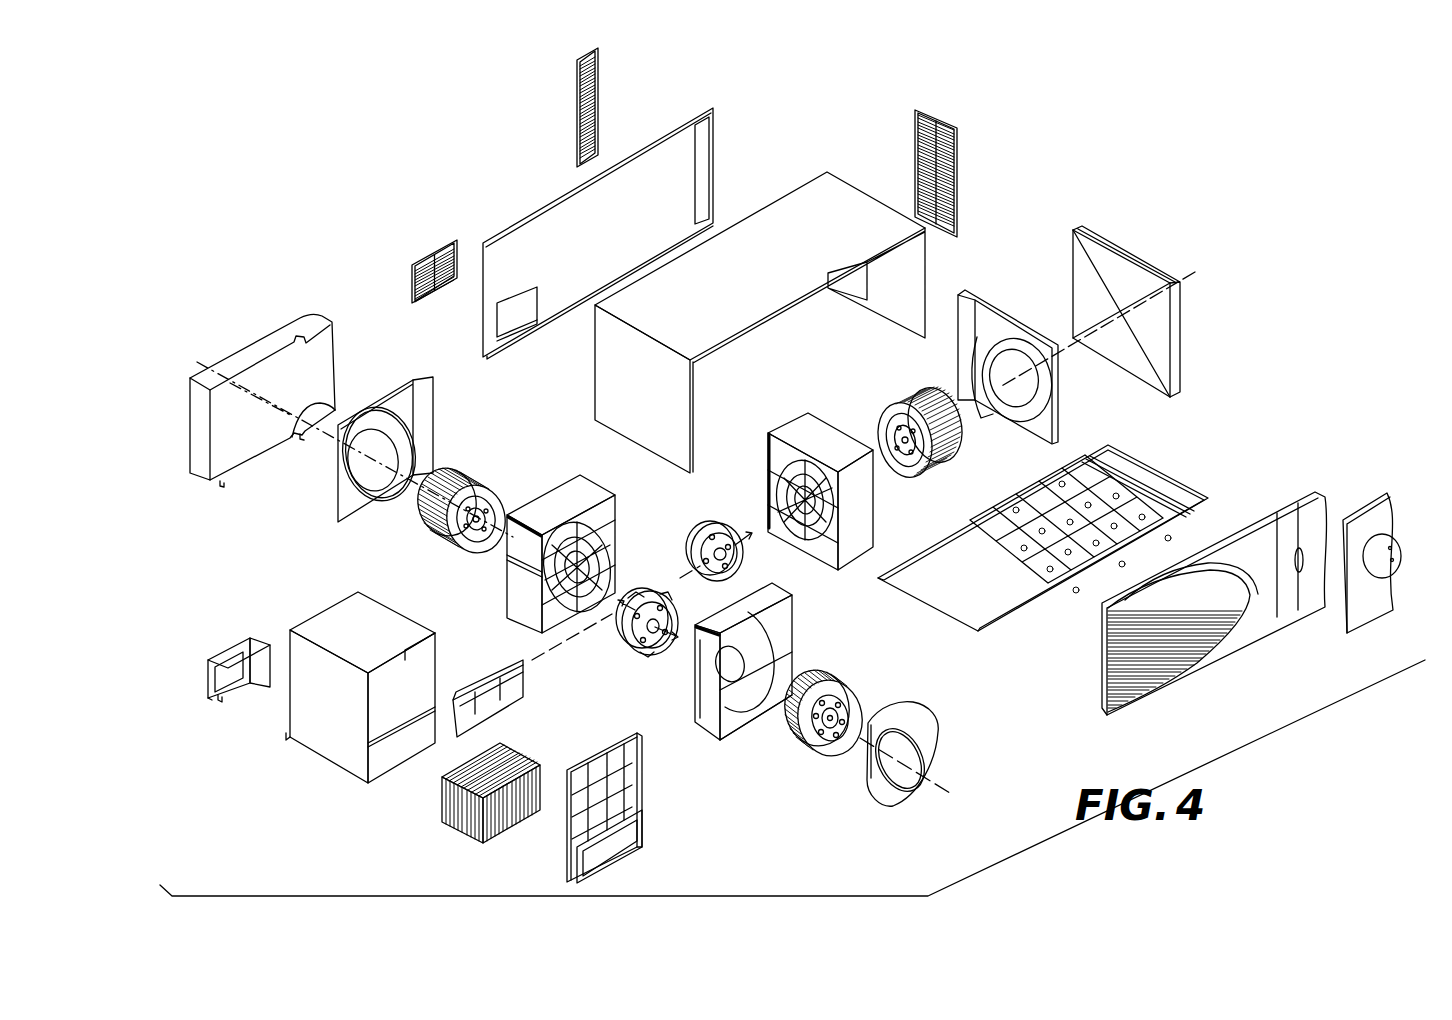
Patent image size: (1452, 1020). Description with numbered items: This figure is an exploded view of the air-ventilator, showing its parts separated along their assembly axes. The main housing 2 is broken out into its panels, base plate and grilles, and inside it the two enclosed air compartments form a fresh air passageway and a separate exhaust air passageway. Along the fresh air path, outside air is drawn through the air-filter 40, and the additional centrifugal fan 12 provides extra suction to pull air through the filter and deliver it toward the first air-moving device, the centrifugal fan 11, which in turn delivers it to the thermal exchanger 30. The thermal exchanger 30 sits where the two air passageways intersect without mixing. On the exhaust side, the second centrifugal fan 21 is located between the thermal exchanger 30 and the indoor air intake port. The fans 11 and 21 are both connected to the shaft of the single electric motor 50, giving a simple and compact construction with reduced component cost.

The main housing 2 is at (835, 186).
The centrifugal fan 11 is at (485, 472).
The centrifugal fan 12 is at (943, 470).
The centrifugal fan 21 is at (861, 684).
The thermal exchanger 30 is at (464, 842).
The air-filter 40 is at (1130, 245).
The electric motor 50 is at (638, 590).